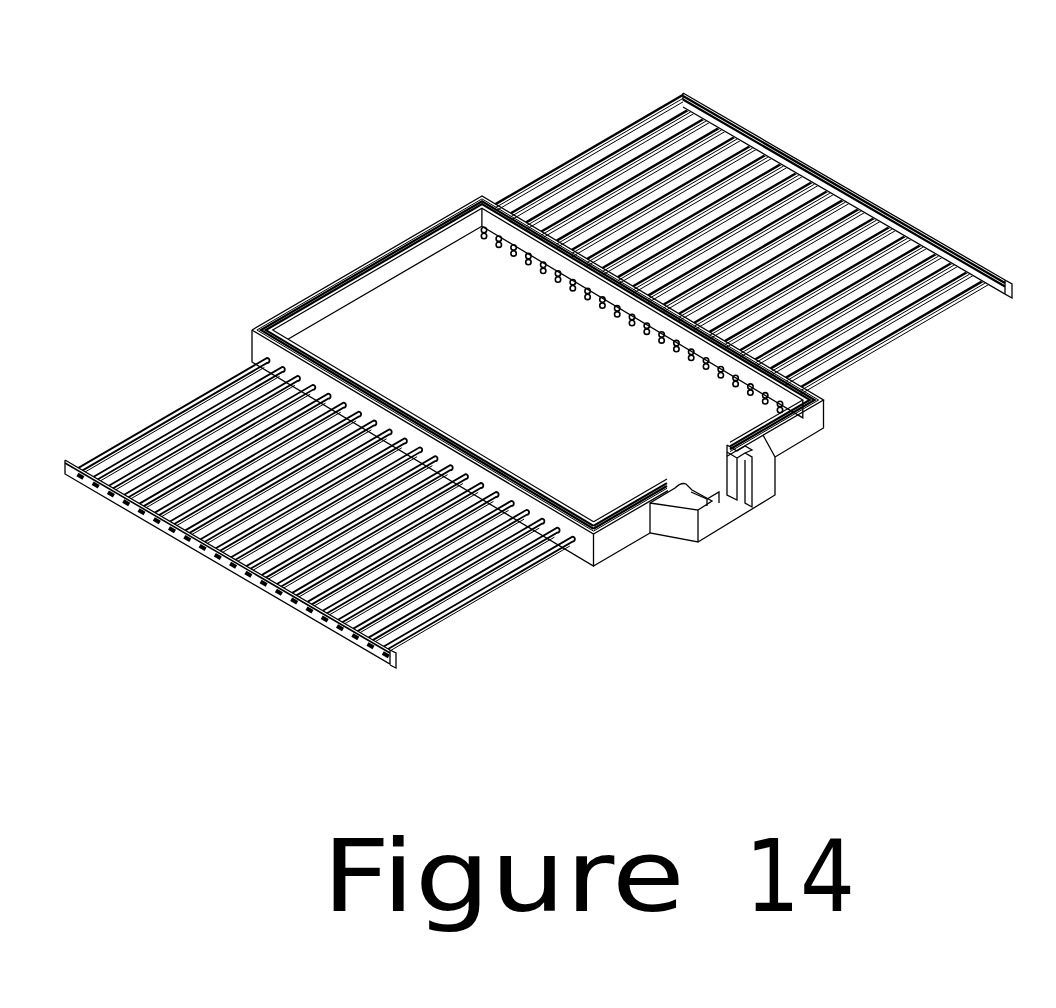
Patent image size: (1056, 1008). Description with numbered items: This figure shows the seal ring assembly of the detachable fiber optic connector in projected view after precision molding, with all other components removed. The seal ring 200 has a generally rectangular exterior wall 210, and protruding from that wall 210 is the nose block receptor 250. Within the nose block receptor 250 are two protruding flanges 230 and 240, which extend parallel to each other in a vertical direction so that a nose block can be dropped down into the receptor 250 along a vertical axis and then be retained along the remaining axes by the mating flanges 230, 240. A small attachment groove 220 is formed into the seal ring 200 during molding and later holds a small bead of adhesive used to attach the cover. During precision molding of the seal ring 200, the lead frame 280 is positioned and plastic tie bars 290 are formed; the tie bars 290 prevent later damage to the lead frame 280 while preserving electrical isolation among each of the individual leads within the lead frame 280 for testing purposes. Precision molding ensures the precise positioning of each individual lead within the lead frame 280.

The seal ring 200 is at (272, 181).
The exterior wall 210 is at (610, 542).
The attachment groove 220 is at (807, 402).
The protruding flange 230 is at (750, 470).
The protruding flange 240 is at (703, 493).
The nose block receptor 250 is at (675, 525).
The lead frame 280 is at (625, 142).
The plastic tie bars 290 is at (923, 223).